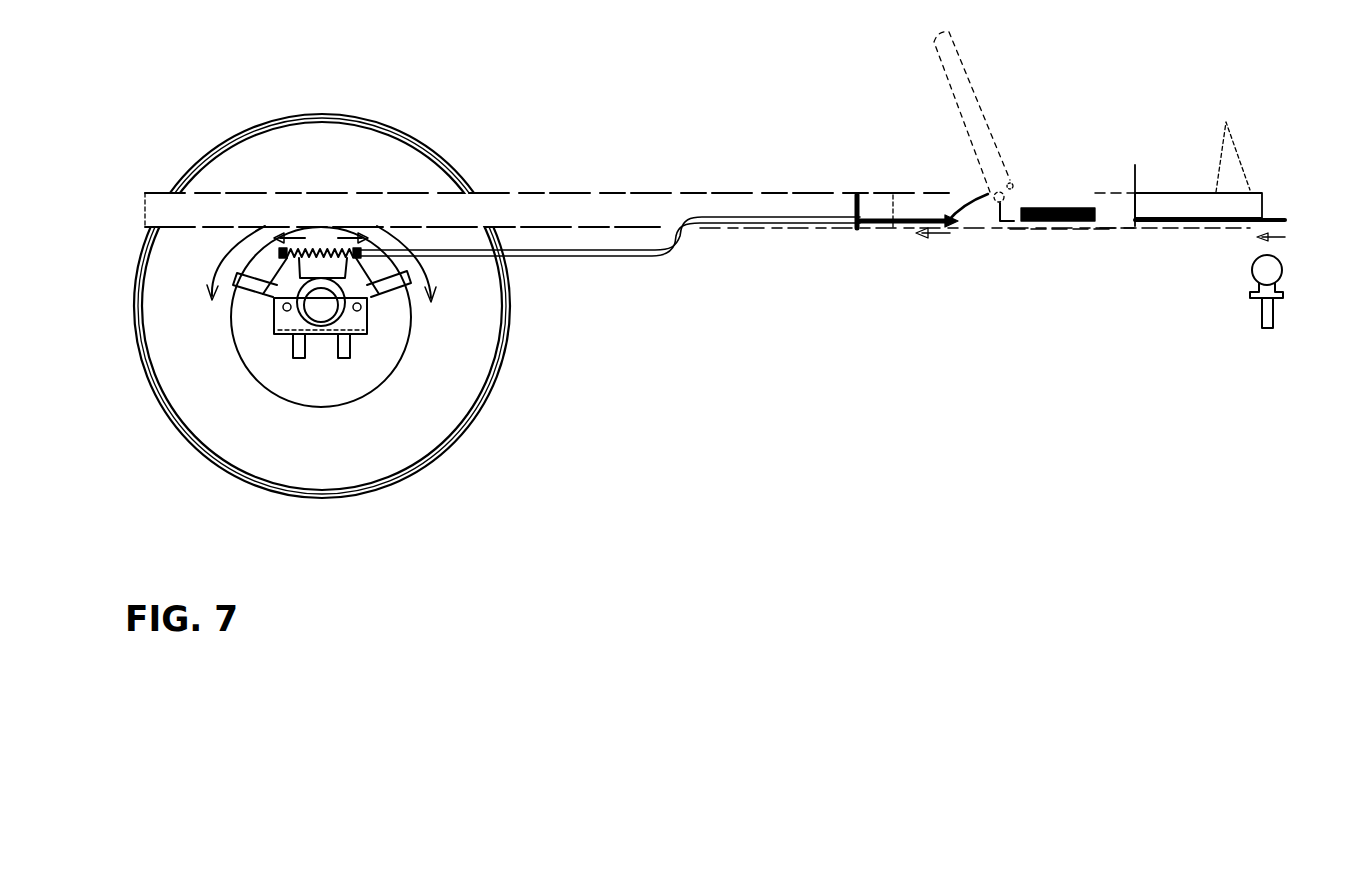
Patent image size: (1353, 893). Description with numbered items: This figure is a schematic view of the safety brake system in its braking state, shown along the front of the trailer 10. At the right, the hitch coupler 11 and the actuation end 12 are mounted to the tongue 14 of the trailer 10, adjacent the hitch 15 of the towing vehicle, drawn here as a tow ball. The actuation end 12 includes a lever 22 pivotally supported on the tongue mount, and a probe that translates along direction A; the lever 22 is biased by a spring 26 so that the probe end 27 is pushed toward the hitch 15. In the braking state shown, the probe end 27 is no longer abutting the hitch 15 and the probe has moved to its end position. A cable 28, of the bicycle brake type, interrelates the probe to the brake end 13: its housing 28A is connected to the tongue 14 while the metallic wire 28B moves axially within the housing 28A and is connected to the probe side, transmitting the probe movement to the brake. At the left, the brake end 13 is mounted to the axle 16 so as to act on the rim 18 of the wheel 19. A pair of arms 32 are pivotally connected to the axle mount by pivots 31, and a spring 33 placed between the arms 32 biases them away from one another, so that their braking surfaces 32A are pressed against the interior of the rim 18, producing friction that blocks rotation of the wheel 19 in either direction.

The trailer 10 is at (714, 158).
The hitch coupler 11 is at (1185, 193).
The actuation end 12 is at (1106, 180).
The brake end 13 is at (367, 258).
The tongue 14 is at (930, 195).
The hitch 15 is at (1283, 270).
The axle 16 is at (323, 310).
The rim 18 is at (407, 332).
The wheel 19 is at (508, 345).
The lever 22 is at (975, 80).
The spring 26 is at (1071, 222).
The probe end 27 is at (1247, 225).
The cable 28 is at (659, 223).
The housing 28A is at (700, 224).
The metallic wire 28B is at (880, 226).
The pivots 31 is at (287, 311).
The arms 32 is at (393, 288).
The braking surfaces 32A is at (380, 293).
The spring 33 is at (320, 250).
The direction A is at (940, 240).